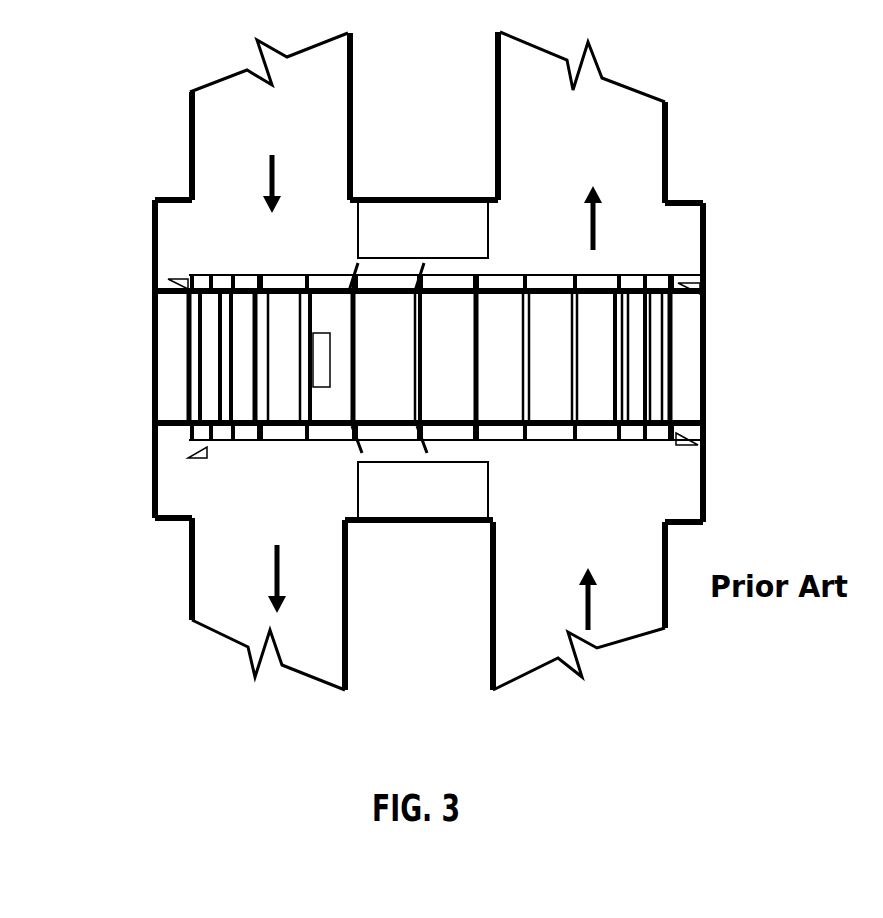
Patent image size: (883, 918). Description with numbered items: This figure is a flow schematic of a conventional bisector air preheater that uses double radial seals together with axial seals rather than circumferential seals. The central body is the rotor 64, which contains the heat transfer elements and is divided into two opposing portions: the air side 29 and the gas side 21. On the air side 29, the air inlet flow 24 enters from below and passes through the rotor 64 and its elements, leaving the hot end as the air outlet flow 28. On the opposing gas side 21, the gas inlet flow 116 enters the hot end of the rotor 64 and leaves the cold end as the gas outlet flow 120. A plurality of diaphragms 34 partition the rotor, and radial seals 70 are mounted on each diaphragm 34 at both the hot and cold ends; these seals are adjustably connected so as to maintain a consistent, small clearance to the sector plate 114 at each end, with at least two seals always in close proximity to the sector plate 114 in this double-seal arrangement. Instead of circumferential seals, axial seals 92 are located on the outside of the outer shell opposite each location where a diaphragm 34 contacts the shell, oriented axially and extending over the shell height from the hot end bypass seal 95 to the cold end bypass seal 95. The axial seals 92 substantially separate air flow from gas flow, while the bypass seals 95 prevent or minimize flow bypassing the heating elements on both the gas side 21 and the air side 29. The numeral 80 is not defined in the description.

The gas side 21 is at (299, 359).
The air inlet flow 24 is at (590, 573).
The air outlet flow 28 is at (595, 184).
The air side 29 is at (551, 362).
The diaphragm 34 is at (345, 282).
The rotor 64 is at (185, 390).
The radial seal 70 is at (493, 267).
The tube bundle 80 is at (388, 372).
The axial seal 92 is at (170, 352).
The bypass seal 95 is at (168, 288).
The sector plate 114 is at (423, 360).
The gas inlet flow 116 is at (261, 156).
The gas outlet flow 120 is at (271, 552).